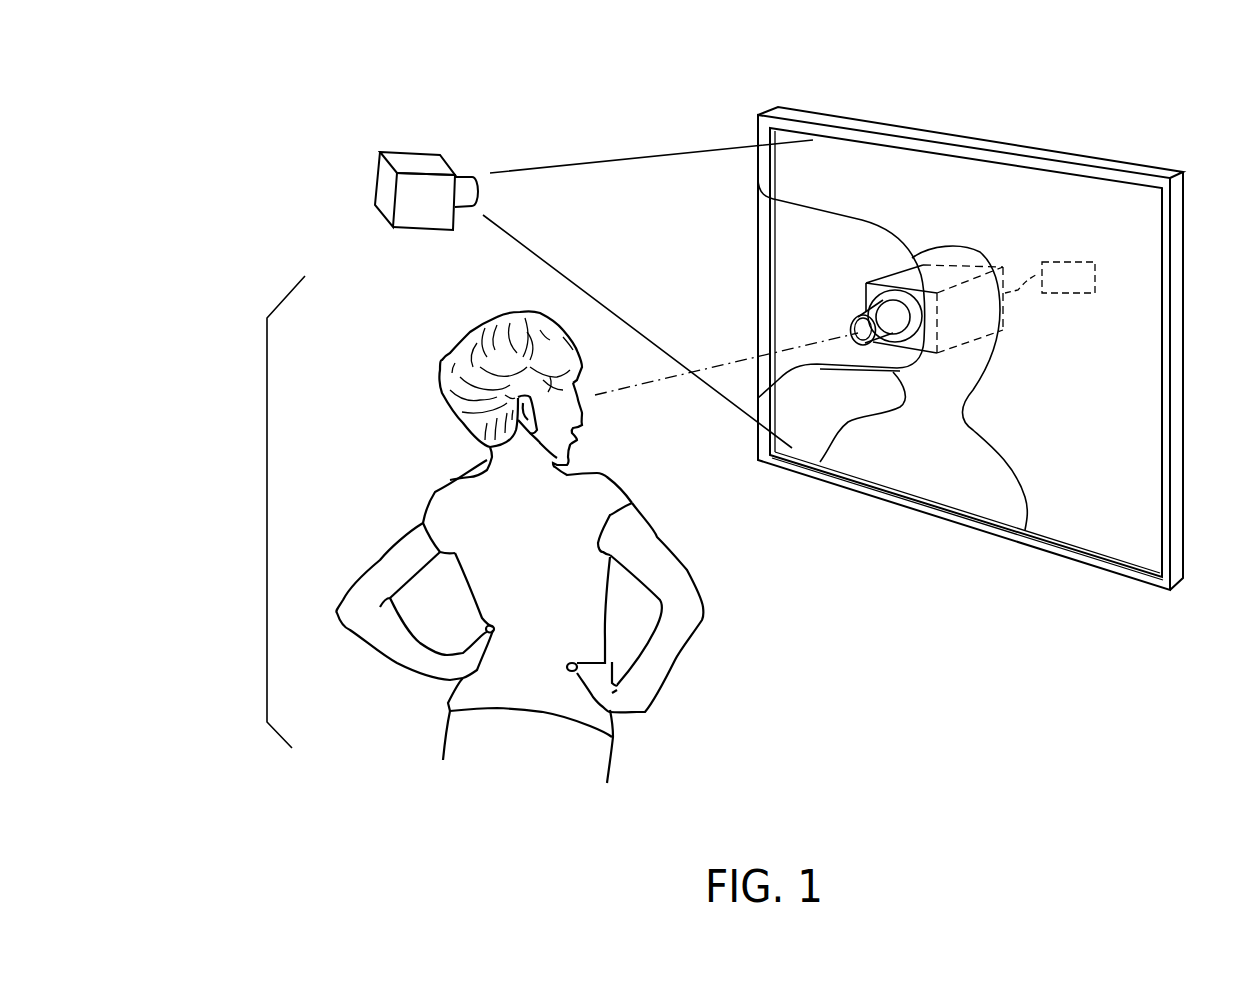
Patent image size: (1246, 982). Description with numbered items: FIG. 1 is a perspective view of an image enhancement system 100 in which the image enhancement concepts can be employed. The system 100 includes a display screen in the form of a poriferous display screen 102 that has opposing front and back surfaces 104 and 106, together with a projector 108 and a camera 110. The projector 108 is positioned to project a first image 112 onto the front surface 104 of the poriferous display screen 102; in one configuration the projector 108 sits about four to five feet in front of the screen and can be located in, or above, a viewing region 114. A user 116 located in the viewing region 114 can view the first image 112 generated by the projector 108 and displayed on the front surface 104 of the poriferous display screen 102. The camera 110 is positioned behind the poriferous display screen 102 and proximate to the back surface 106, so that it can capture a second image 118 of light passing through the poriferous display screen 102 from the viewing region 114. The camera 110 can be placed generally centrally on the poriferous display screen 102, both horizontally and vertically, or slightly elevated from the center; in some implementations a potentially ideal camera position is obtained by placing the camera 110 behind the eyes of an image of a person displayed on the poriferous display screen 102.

The system 100 is at (800, 45).
The poriferous display screen 102 is at (964, 128).
The front surface 104 is at (1093, 537).
The back surface 106 is at (850, 363).
The projector 108 is at (381, 153).
The camera 110 is at (866, 285).
The first image 112 is at (996, 442).
The viewing region 114 is at (266, 354).
The user 116 is at (437, 492).
The second image 118 is at (1087, 287).